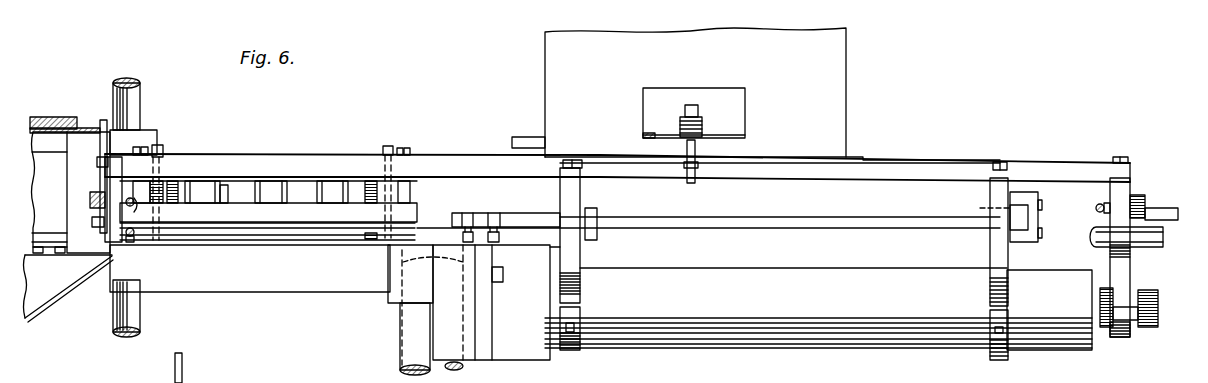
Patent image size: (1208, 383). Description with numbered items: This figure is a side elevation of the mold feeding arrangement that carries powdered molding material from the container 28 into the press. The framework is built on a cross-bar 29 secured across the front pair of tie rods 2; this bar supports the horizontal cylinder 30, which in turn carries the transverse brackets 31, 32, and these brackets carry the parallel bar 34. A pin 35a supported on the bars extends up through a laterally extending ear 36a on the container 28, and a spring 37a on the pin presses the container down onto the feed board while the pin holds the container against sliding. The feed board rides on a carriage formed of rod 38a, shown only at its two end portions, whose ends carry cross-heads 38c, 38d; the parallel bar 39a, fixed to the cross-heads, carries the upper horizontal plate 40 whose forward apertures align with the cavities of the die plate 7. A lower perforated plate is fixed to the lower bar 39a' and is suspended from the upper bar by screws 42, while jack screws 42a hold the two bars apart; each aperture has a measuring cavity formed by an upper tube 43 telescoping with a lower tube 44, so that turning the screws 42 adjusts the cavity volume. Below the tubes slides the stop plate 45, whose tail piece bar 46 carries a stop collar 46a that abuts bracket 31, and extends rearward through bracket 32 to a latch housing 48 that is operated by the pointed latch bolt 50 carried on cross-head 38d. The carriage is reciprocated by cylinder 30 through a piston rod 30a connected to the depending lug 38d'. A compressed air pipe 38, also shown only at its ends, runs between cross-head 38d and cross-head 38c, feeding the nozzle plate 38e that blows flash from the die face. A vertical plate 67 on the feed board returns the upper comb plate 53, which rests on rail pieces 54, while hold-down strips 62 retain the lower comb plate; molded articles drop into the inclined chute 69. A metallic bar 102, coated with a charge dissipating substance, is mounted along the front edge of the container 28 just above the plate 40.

The tie rods 2 is at (142, 95).
The die plate 7 is at (200, 287).
The container 28 is at (846, 120).
The cross-bar 29 is at (483, 357).
The horizontal cylinder 30 is at (725, 337).
The piston rod 30a is at (1097, 308).
The transverse bracket 31 is at (580, 190).
The transverse bracket 32 is at (990, 195).
The parallel bar 34 is at (844, 174).
The pin 35a is at (696, 148).
The ear 36a is at (652, 137).
The spring 37a is at (716, 114).
The compressed air pipe 38 is at (129, 234).
The parallel rod 38a is at (1098, 207).
The cross-head 38c is at (113, 188).
The cross-head 38d is at (1145, 247).
The depending lug 38d' is at (1135, 346).
The nozzle plate 38e is at (88, 193).
The parallel bar 39a is at (618, 157).
The lower parallel bar 39a' is at (268, 220).
The upper horizontal plate 40 is at (333, 153).
The screws 42 is at (160, 145).
The jack screws 42a is at (182, 183).
The upper tube 43 is at (258, 188).
The lower tube 44 is at (258, 205).
The stop plate 45 is at (430, 228).
The bar 46 is at (727, 221).
The stop collar 46a is at (599, 202).
The housing 48 is at (1028, 192).
The pointed latch bolt 50 is at (1167, 215).
The comb plate 53 is at (48, 126).
The rail pieces 54 is at (50, 189).
The hold-down strips 62 is at (49, 228).
The vertical plate 67 is at (103, 120).
The inclined chute 69 is at (42, 300).
The metallic bar 102 is at (520, 137).